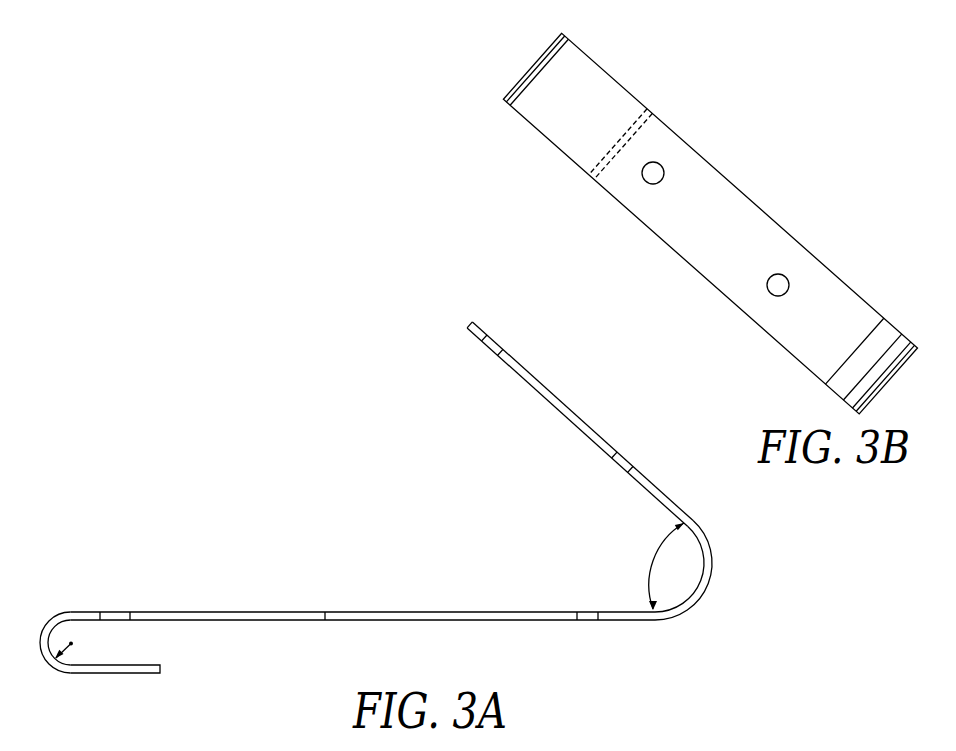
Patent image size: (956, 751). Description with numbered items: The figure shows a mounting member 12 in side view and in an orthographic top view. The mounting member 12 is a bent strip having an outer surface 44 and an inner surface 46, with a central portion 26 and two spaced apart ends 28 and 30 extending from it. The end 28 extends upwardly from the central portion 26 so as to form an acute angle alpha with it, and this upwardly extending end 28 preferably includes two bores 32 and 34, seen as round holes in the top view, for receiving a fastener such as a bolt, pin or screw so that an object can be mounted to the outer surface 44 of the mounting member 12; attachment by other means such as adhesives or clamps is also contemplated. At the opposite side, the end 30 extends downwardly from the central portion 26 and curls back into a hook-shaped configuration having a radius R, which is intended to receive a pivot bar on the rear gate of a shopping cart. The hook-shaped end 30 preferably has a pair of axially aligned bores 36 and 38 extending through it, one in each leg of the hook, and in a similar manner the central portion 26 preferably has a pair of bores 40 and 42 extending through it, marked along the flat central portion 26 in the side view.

In FIG. 3A, the mounting member 12 is at (371, 525).
In FIG. 3A, the central portion 26 is at (427, 610).
In FIG. 3A, the end 28 is at (567, 471).
In FIG. 3B, the end 28 is at (710, 223).
In FIG. 3A, the end 30 is at (84, 608).
In FIG. 3A, the bore 32 is at (484, 345).
In FIG. 3B, the bore 32 is at (651, 162).
In FIG. 3A, the bore 34 is at (632, 466).
In FIG. 3B, the bore 34 is at (784, 275).
In FIG. 3A, the bore 36 is at (117, 611).
In FIG. 3A, the bore 38 is at (120, 674).
In FIG. 3A, the bore 40 is at (320, 621).
In FIG. 3A, the bore 42 is at (587, 621).
In FIG. 3A, the outer surface 44 is at (606, 442).
In FIG. 3A, the inner surface 46 is at (582, 432).
In FIG. 3A, the radius R is at (70, 652).